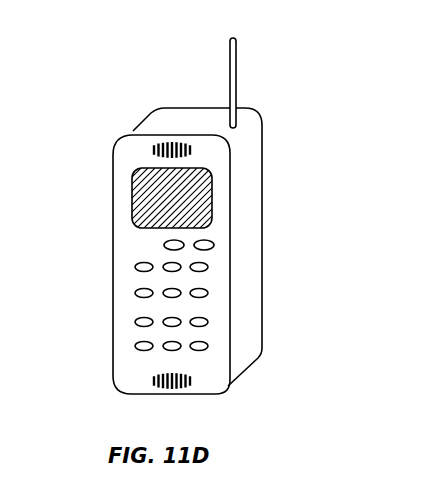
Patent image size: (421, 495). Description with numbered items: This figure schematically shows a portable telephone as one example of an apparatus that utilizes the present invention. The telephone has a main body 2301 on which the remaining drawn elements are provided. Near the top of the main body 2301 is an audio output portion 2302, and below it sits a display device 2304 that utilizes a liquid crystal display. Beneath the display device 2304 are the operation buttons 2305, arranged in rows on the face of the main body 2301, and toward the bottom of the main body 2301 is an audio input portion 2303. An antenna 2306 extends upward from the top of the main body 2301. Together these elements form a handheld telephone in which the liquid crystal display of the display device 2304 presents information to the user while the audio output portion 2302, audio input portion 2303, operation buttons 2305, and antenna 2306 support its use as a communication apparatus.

The main body 2301 is at (187, 117).
The audio output portion 2302 is at (165, 143).
The audio input portion 2303 is at (160, 388).
The display device 2304 is at (143, 187).
The operation buttons 2305 is at (137, 318).
The antenna 2306 is at (235, 80).